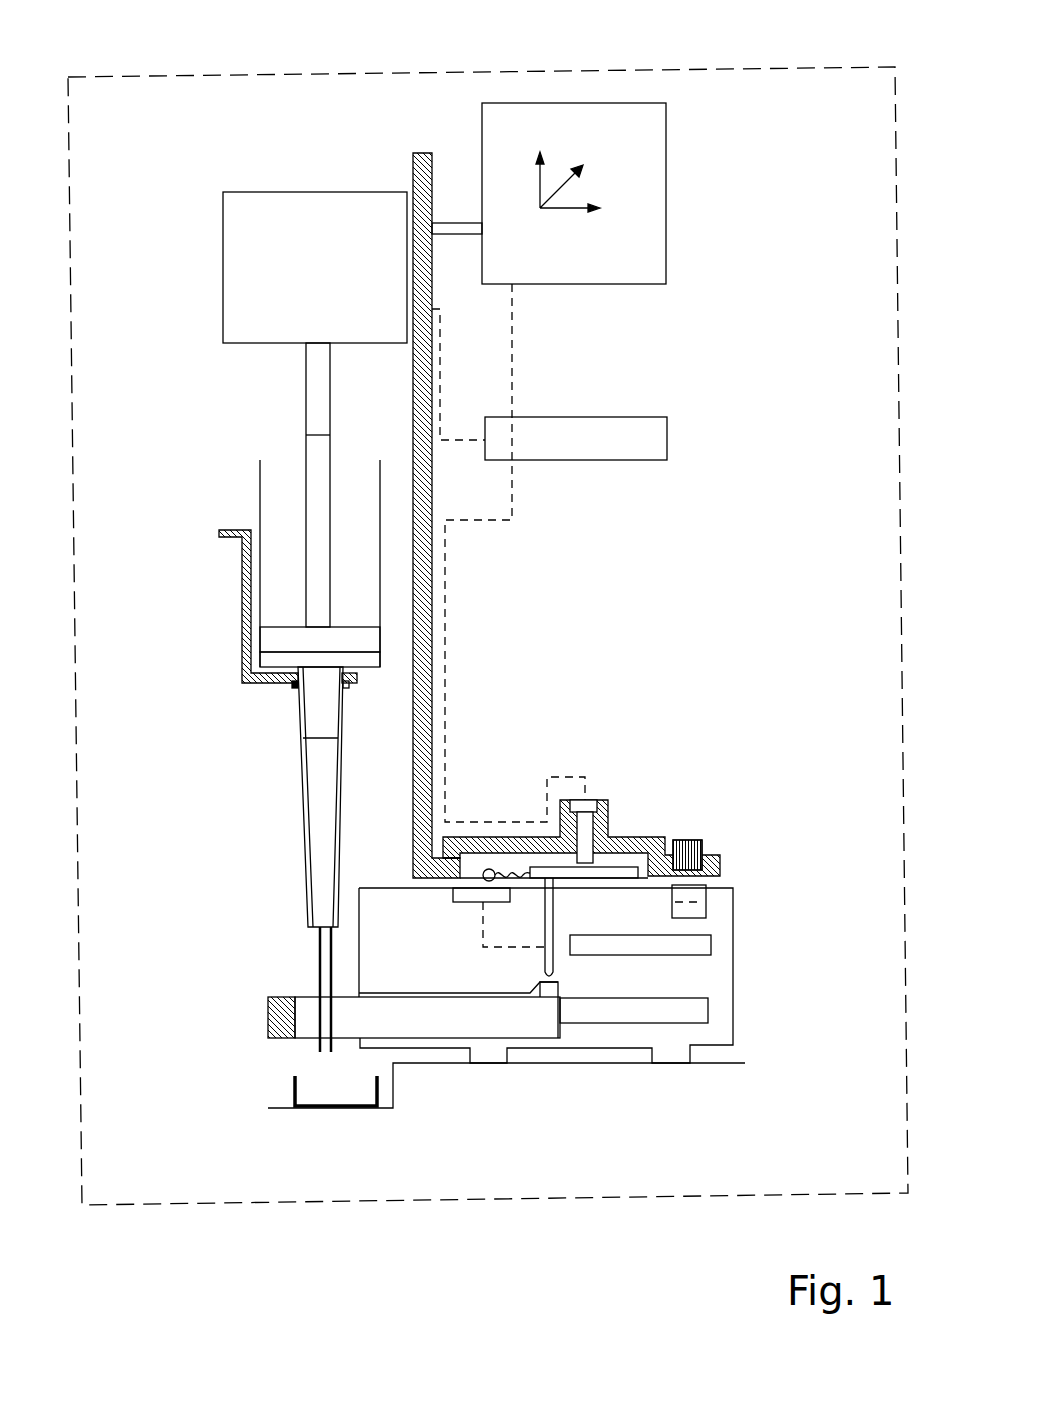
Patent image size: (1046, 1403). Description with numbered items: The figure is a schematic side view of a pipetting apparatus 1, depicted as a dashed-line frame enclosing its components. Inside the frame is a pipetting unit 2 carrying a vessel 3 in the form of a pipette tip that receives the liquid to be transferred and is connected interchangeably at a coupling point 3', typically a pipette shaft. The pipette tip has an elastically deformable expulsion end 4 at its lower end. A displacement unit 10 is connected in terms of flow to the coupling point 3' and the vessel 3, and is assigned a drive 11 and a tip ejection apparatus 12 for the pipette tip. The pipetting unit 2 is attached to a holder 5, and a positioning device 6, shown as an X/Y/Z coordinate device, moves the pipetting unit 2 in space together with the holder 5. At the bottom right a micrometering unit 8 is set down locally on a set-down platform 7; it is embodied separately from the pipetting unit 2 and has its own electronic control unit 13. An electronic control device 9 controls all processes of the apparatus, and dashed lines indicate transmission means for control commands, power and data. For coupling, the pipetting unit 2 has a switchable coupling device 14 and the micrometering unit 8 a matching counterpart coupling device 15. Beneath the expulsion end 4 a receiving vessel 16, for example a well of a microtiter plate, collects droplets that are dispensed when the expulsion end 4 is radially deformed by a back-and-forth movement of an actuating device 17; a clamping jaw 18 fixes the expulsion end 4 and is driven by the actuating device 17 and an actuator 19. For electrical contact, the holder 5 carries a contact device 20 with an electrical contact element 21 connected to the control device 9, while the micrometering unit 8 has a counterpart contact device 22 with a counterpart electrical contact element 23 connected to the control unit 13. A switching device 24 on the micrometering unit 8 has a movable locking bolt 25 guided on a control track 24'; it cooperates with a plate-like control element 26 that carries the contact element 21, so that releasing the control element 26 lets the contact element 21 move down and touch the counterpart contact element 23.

The pipetting apparatus 1 is at (762, 67).
The pipetting unit 2 is at (210, 415).
The vessel 3 is at (232, 797).
The coupling point 3' is at (226, 724).
The expulsion end 4 is at (318, 942).
The holder 5 is at (432, 505).
The positioning device 6 is at (666, 180).
The set-down platform 7 is at (670, 1063).
The micrometering unit 8 is at (755, 1042).
The electronic control device 9 is at (667, 437).
The displacement unit 10 is at (259, 483).
The drive 11 is at (223, 290).
The tip ejection apparatus 12 is at (242, 603).
The electronic control unit 13 is at (706, 945).
The coupling device 14 is at (700, 840).
The counterpart coupling device 15 is at (706, 895).
The receiving vessel 16 is at (295, 1092).
The actuating device 17 is at (458, 1025).
The clamping jaw 18 is at (268, 1017).
The actuator 19 is at (690, 1010).
The contact device 20 is at (660, 800).
The electrical contact element 21 is at (513, 872).
The counterpart contact device 22 is at (427, 890).
The counterpart electrical contact element 23 is at (465, 893).
The switching device 24 is at (656, 889).
The control track 24' is at (543, 1084).
The locking bolt 25 is at (553, 966).
The control element 26 is at (620, 868).